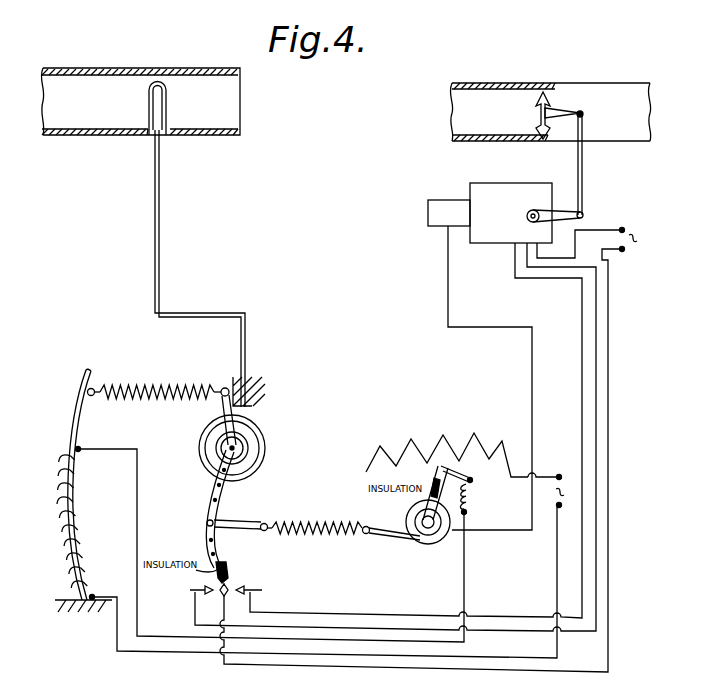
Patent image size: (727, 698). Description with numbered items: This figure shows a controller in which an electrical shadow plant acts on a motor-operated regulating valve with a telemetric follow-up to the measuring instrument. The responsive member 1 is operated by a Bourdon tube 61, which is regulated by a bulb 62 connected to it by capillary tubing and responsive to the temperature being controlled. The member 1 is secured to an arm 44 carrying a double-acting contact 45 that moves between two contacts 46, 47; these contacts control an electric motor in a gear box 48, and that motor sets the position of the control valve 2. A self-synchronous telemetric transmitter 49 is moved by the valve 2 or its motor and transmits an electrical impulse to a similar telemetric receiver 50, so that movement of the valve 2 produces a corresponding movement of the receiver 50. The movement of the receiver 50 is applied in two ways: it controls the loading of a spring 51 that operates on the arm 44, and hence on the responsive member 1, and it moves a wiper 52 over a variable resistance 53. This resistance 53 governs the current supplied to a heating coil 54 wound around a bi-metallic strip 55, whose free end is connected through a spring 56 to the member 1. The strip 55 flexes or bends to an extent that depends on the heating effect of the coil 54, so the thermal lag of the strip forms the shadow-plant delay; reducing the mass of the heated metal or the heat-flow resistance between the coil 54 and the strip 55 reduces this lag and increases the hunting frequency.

The bulb 62 is at (165, 114).
The control valve 2 is at (560, 109).
The self-synchronous telemetric transmitter 49 is at (444, 210).
The gear box 48 is at (526, 213).
The spring 56 is at (152, 388).
The responsive member 1 is at (247, 418).
The Bourdon tube 61 is at (259, 453).
The bi-metallic strip 55 is at (76, 442).
The heating coil 54 is at (63, 532).
The arm 44 is at (206, 512).
The double-acting contact 45 is at (230, 586).
The contact 46 is at (190, 590).
The contact 47 is at (258, 592).
The spring 51 is at (330, 524).
The variable resistance 53 is at (447, 440).
The wiper 52 is at (478, 492).
The telemetric receiver 50 is at (428, 546).